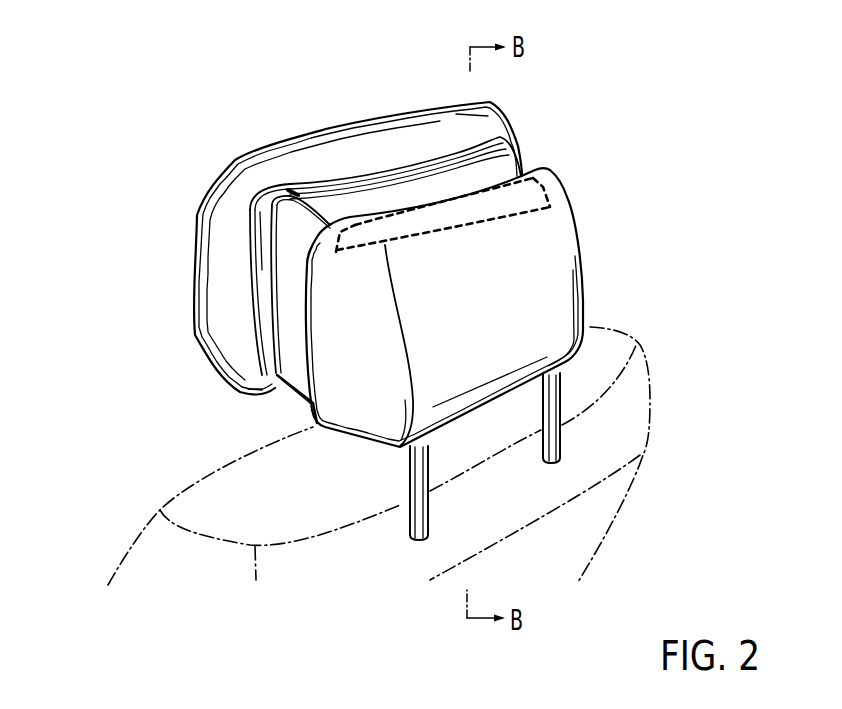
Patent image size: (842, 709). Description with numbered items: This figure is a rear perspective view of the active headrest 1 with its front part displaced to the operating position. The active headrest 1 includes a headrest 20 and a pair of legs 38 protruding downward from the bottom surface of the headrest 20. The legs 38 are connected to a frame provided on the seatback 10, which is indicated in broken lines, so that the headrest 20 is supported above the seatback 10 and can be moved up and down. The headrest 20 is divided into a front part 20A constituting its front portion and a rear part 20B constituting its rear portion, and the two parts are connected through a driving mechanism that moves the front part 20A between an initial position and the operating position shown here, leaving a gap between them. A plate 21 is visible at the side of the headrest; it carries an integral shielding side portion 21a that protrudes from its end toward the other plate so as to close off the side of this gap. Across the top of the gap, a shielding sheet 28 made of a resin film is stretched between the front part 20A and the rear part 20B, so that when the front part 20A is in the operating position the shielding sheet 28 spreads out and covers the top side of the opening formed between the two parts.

The active headrest 1 is at (273, 97).
The seatback 10 is at (190, 490).
The headrest 20 is at (567, 133).
The front part 20A is at (208, 233).
The rear part 20B is at (583, 267).
The plate 21 is at (280, 265).
The shielding side portion 21a is at (290, 292).
The shielding sheet 28 is at (417, 192).
The legs 38 is at (557, 435).